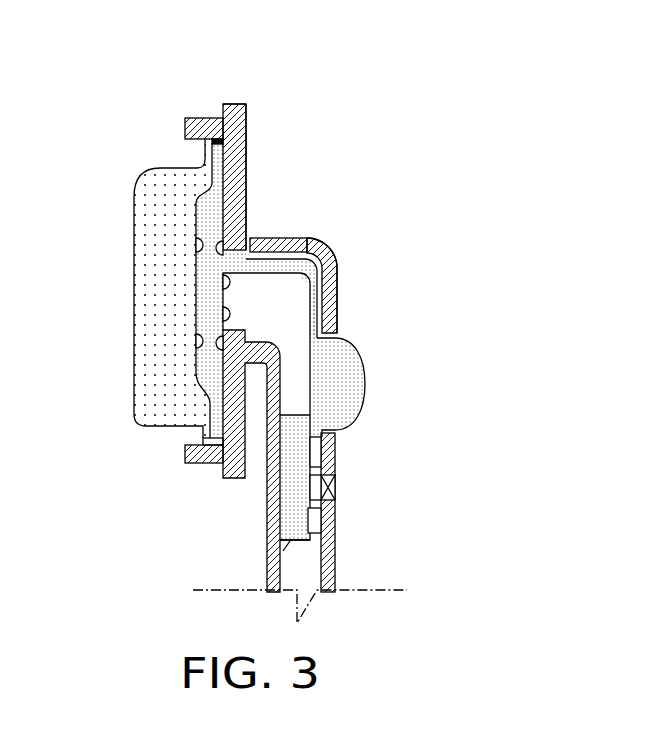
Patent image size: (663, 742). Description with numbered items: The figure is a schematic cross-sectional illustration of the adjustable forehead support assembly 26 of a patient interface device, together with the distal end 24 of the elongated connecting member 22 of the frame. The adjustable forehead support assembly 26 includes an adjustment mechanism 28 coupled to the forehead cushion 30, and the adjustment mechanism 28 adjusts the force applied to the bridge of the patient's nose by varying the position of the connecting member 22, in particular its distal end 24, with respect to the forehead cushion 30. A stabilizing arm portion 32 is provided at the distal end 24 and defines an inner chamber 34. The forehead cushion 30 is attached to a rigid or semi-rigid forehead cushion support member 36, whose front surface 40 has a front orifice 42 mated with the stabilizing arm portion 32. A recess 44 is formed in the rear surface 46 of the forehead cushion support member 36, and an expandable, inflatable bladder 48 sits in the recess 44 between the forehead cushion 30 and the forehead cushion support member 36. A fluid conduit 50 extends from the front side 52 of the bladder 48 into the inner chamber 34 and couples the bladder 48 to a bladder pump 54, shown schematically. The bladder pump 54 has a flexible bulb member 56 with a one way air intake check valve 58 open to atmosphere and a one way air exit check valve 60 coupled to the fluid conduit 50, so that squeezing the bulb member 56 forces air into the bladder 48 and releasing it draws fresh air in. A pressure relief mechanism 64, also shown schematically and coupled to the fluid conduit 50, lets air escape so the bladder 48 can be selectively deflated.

The connecting member 22 is at (332, 557).
The distal end 24 is at (272, 532).
The adjustable forehead support assembly 26 is at (211, 101).
The adjustment mechanism 28 is at (339, 247).
The forehead cushion 30 is at (133, 196).
The stabilizing arm portion 32 is at (268, 248).
The inner chamber 34 is at (292, 302).
The forehead cushion support member 36 is at (253, 101).
The front surface 40 is at (247, 127).
The front orifice 42 is at (230, 318).
The recess 44 is at (200, 433).
The rear surface 46 is at (187, 128).
The bladder 48 is at (198, 298).
The fluid conduit 50 is at (298, 266).
The front side 52 is at (230, 274).
The bladder pump 54 is at (283, 551).
The bulb member 56 is at (312, 520).
The air intake check valve 58 is at (333, 483).
The air exit check valve 60 is at (317, 452).
The pressure relief mechanism 64 is at (365, 377).